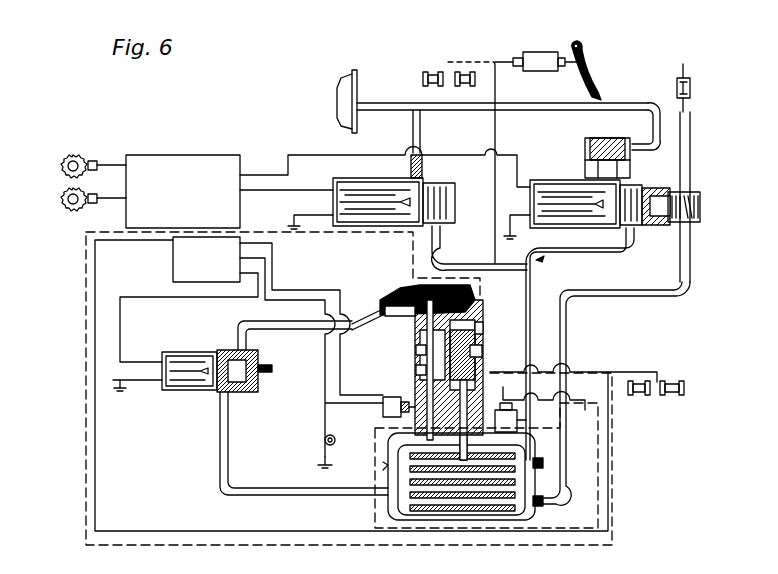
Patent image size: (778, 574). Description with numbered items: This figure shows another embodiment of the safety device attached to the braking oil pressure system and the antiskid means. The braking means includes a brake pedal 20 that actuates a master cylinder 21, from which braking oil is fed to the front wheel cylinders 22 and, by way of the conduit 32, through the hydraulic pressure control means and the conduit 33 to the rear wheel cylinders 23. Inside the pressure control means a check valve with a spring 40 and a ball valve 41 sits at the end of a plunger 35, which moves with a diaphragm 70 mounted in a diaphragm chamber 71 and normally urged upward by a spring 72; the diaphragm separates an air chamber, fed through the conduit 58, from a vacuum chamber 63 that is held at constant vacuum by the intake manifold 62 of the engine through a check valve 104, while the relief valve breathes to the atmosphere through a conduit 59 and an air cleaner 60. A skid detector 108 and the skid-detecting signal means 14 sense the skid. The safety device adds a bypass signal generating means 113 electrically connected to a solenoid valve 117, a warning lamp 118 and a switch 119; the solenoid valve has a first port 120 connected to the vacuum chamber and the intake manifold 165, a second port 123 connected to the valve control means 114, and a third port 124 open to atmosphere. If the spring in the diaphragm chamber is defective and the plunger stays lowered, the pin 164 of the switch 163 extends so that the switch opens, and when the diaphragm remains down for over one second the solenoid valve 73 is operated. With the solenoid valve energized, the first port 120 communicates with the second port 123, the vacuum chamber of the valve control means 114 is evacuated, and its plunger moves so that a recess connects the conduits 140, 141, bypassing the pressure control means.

The skid-detecting signal means 14 is at (183, 155).
The brake pedal 20 is at (585, 52).
The master cylinder 21 is at (519, 58).
The front wheel cylinders 22 is at (464, 88).
The rear wheel cylinders 23 is at (664, 382).
The conduit 32 is at (500, 70).
The conduit 33 is at (620, 372).
The plunger 35 is at (475, 348).
The spring 40 is at (480, 316).
The ball valve 41 is at (482, 331).
The conduit 58 is at (448, 298).
The conduit 59 is at (619, 98).
The air cleaner 60 is at (349, 70).
The intake manifold 62 is at (86, 296).
The vacuum chamber 63 is at (512, 520).
The diaphragm 70 is at (550, 498).
The diaphragm chamber 71 is at (543, 462).
The spring 72 is at (545, 502).
The solenoid valve 73 is at (405, 305).
The check valve 104 is at (690, 88).
The skid detector 108 is at (62, 169).
The bypass signal generating means 113 is at (173, 263).
The valve control means 114 is at (405, 341).
The solenoid valve 117 is at (190, 392).
The warning lamp 118 is at (376, 415).
The switch 119 is at (386, 412).
The first port 120 is at (226, 394).
The second port 123 is at (238, 344).
The third port 124 is at (258, 372).
The conduit 140 is at (415, 351).
The conduit 141 is at (416, 371).
The switch 163 is at (557, 405).
The pin 164 is at (535, 420).
The intake manifold 165 is at (478, 455).